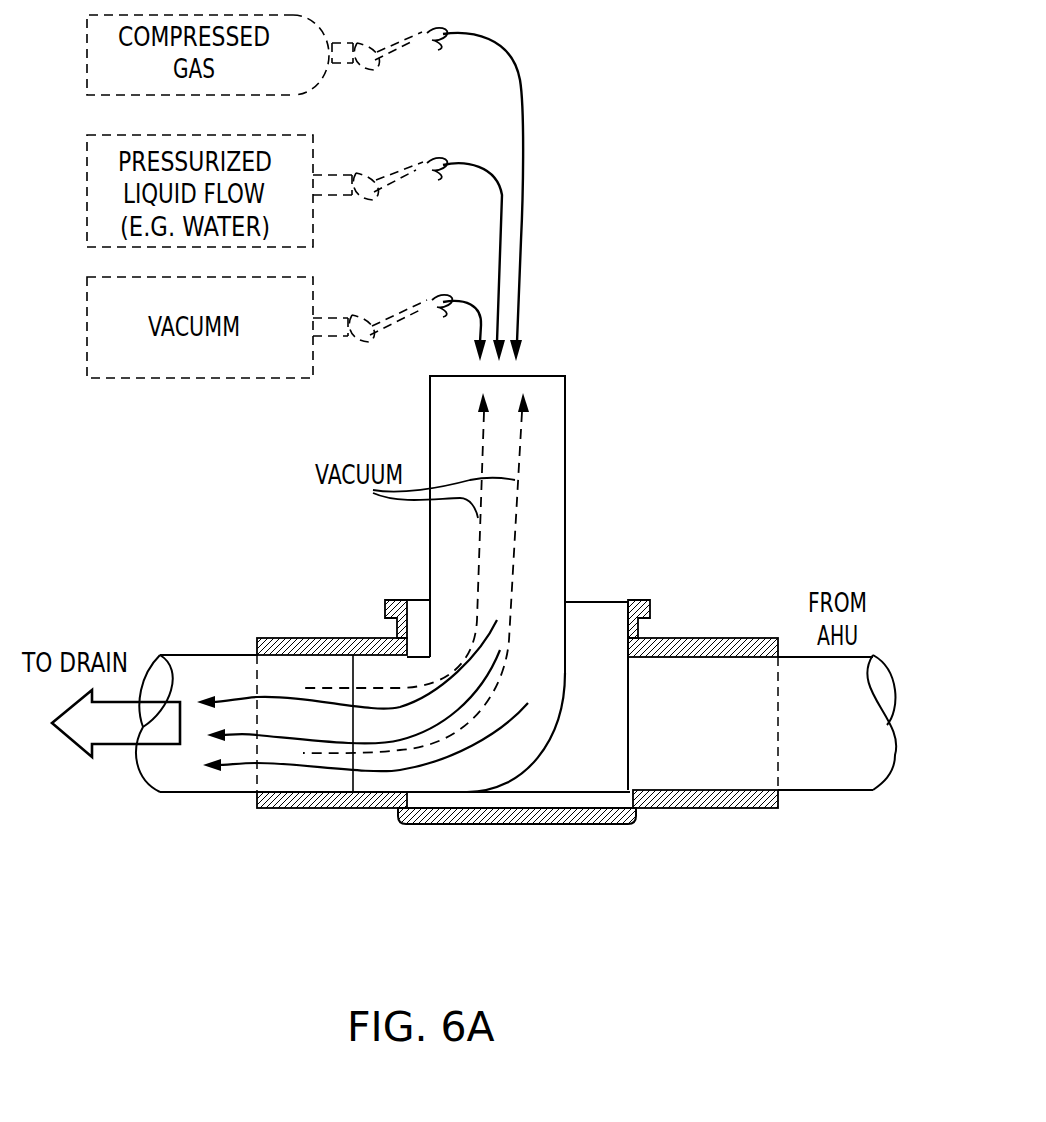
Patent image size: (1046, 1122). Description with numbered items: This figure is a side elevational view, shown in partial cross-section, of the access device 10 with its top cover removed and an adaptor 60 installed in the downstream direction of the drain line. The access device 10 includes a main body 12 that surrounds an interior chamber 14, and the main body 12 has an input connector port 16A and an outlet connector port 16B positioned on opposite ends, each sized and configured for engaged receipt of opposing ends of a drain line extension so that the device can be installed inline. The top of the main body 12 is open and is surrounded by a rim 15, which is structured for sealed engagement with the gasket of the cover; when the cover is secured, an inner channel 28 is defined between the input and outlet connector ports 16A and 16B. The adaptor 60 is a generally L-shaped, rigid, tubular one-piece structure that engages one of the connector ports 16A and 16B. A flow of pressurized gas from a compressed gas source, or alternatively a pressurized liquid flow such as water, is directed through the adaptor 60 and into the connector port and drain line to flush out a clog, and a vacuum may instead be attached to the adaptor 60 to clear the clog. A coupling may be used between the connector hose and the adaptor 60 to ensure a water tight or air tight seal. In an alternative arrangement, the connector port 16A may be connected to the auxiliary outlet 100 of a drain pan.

The access device 10 is at (325, 550).
The adaptor 60 is at (578, 480).
The rim 15 is at (588, 600).
The interior chamber 14 is at (606, 622).
The main body 12 is at (476, 835).
The inner channel 28 is at (570, 770).
The outlet connector port 16B is at (256, 773).
The input connector port 16A is at (705, 770).
The auxiliary outlet 100 is at (183, 793).